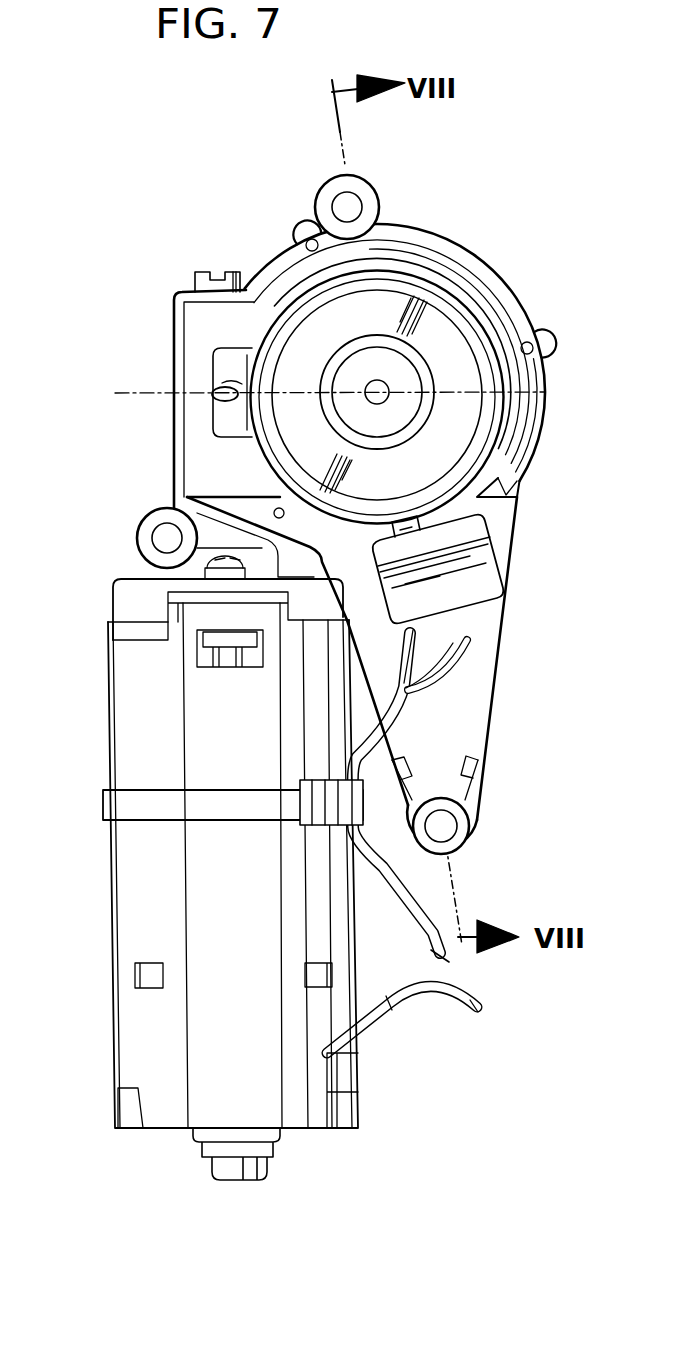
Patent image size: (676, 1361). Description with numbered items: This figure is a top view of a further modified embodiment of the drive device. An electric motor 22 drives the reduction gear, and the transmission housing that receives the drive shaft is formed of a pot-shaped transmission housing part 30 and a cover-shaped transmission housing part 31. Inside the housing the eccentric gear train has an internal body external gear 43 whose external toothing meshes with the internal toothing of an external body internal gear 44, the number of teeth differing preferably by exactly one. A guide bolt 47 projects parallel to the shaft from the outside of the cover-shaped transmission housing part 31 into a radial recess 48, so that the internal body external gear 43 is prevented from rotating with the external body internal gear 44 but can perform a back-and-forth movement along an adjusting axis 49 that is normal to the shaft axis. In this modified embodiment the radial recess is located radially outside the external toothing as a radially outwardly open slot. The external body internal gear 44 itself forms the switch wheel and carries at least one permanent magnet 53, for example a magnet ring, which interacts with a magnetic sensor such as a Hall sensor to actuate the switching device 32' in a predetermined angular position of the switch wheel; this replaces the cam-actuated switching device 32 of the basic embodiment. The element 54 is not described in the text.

The electric motor 22 is at (142, 862).
The pot-shaped transmission housing part 30 is at (135, 598).
The cover-shaped transmission housing part 31 is at (212, 328).
The switching device 32 is at (481, 569).
The switching device 32' is at (481, 569).
The internal body external gear 43 is at (232, 432).
The external body internal gear 44 is at (448, 333).
The guide bolt 47 is at (213, 395).
The radial recess 48 is at (220, 383).
The adjusting axis 49 is at (134, 398).
The permanent magnet 53 is at (500, 412).
The switch terminal 54 is at (430, 533).